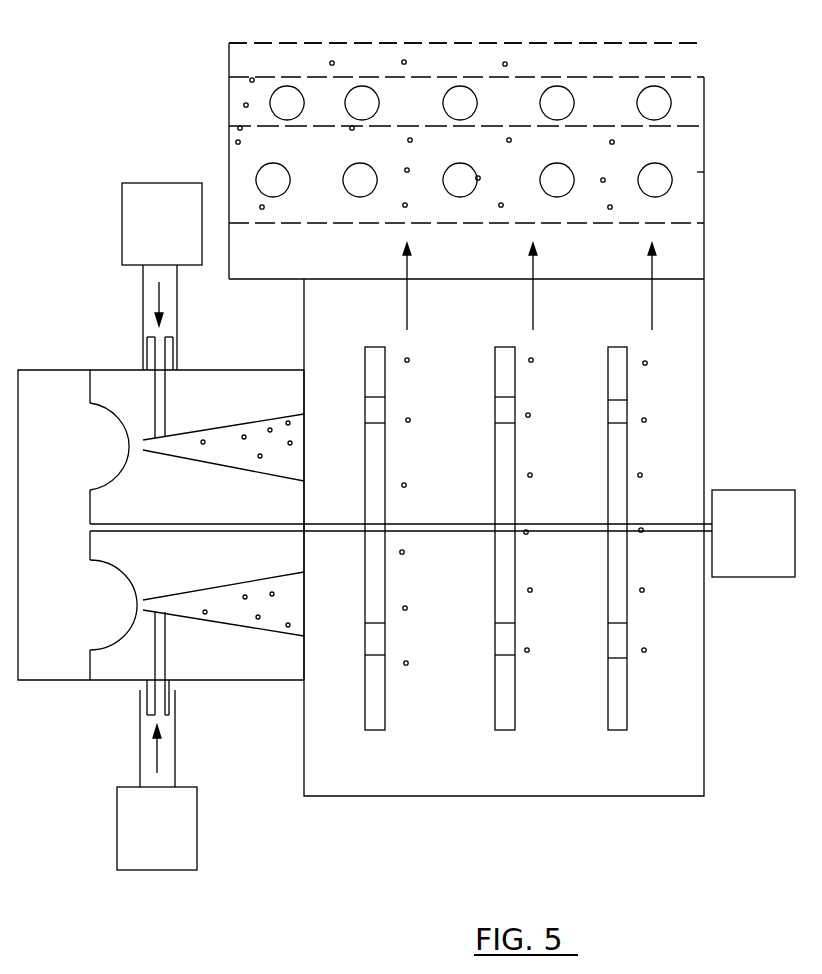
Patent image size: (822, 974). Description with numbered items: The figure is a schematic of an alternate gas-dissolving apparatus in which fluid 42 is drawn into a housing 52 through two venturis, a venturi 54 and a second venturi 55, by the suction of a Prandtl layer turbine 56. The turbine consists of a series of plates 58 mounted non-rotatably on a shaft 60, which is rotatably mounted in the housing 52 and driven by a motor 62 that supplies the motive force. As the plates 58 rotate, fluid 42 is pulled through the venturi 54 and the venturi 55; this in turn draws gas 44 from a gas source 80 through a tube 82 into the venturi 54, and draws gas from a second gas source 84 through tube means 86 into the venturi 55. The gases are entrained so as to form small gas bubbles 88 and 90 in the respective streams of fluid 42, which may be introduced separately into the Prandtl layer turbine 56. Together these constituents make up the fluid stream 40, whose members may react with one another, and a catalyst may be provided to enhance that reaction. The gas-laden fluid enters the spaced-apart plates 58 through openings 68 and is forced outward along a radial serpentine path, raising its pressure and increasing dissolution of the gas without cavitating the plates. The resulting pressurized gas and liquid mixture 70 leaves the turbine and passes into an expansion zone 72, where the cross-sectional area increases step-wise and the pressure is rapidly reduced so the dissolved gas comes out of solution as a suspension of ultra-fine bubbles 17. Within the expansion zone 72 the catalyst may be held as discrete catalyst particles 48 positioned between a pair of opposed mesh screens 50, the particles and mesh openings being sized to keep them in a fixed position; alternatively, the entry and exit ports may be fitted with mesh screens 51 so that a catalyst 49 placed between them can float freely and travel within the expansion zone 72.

The ultra-fine bubbles 17 is at (621, 67).
The fluid stream 40 is at (290, 430).
The fluid 42 is at (124, 445).
The gas 44 is at (155, 297).
The catalyst particles 48 is at (672, 107).
The catalyst 49 is at (672, 188).
The mesh screens 50 is at (700, 77).
The mesh screens 51 is at (700, 43).
The housing 52 is at (704, 776).
The venturi 54 is at (115, 668).
The second venturi 55 is at (245, 380).
The Prandtl layer turbine 56 is at (582, 820).
The plates 58 is at (627, 392).
The shaft 60 is at (665, 523).
The motor 62 is at (748, 500).
The openings 68 is at (377, 660).
The pressurized gas and liquid mixture 70 is at (655, 266).
The expansion zone 72 is at (698, 172).
The gas source 80 is at (183, 842).
The tube 82 is at (176, 760).
The gas source 84 is at (195, 220).
The tube means 86 is at (178, 305).
The gas bubbles 88 is at (222, 613).
The gas bubbles 90 is at (225, 452).